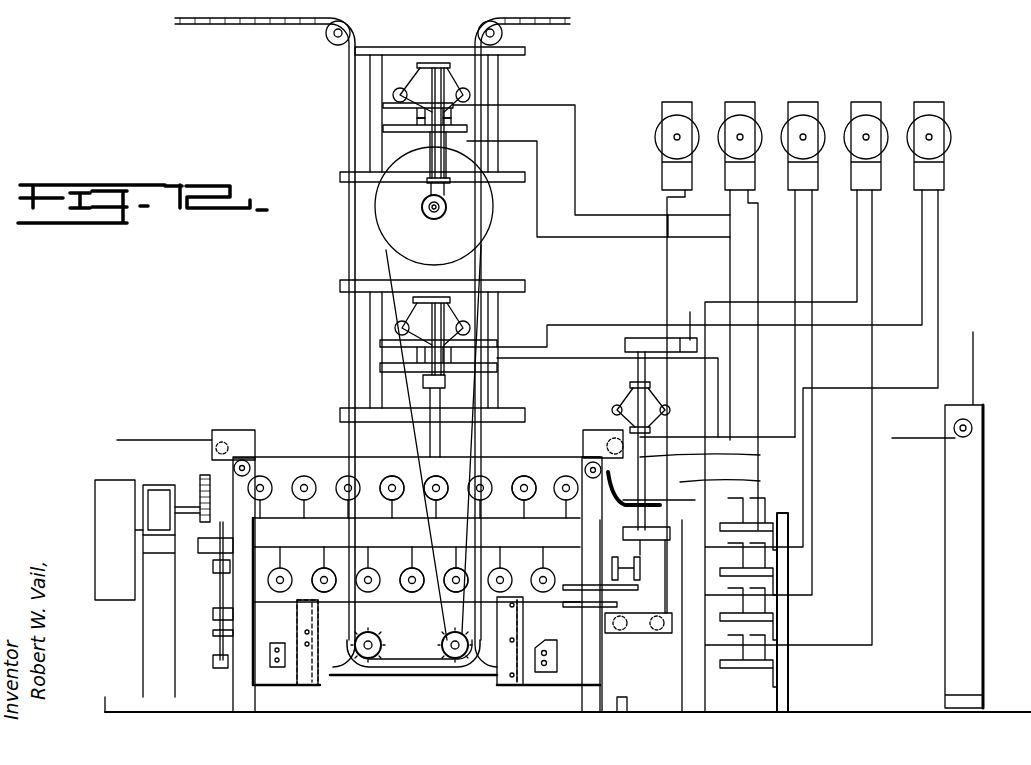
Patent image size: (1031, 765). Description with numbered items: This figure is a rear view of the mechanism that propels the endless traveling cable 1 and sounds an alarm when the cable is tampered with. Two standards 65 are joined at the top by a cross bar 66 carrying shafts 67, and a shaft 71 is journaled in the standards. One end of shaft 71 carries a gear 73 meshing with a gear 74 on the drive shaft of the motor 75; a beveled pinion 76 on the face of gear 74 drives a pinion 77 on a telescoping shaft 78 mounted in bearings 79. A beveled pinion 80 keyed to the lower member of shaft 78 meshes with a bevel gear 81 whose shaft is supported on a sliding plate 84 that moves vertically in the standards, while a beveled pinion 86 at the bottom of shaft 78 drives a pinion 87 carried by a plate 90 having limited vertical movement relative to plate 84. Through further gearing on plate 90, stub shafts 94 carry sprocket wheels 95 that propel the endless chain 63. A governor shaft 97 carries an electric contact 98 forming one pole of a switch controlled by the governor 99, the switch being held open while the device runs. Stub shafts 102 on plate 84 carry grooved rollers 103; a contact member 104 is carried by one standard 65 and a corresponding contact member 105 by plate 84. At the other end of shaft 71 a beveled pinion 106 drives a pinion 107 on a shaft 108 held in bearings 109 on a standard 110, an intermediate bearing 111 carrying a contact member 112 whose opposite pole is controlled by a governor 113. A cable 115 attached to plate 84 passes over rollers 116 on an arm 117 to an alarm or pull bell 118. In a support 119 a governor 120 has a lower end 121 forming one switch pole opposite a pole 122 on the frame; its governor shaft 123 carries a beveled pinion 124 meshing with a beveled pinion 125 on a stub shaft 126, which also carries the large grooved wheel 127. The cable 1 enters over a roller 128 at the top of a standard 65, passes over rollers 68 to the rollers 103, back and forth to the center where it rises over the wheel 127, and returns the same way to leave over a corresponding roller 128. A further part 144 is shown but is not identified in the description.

The endless traveling cable 1 is at (487, 256).
The endless chain 63 is at (347, 396).
The standards 65 is at (252, 668).
The cross bar 66 is at (324, 470).
The shafts 67 is at (390, 472).
The rollers 68 is at (514, 472).
The shaft 71 is at (251, 466).
The gear 73 is at (203, 478).
The gear 74 is at (200, 508).
The motor 75 is at (150, 508).
The beveled pinion 76 is at (252, 487).
The pinion 77 is at (268, 478).
The telescoping shaft 78 is at (217, 590).
The bearings 79 is at (215, 617).
The beveled pinion 80 is at (212, 573).
The bevel gear 81 is at (219, 590).
The sliding plate 84 is at (288, 682).
The beveled pinion 86 is at (215, 635).
The pinion 87 is at (220, 655).
The plate 90 is at (333, 673).
The stub shafts 94 is at (352, 648).
The sprocket wheels 95 is at (445, 642).
The governor shaft 97 is at (437, 433).
The electric contact 98 is at (400, 356).
The governor 99 is at (470, 330).
The stub shafts 102 is at (280, 592).
The grooved rollers 103 is at (323, 592).
The contact member 104 is at (645, 570).
The contact member 105 is at (621, 591).
The beveled pinion 106 is at (607, 457).
The pinion 107 is at (623, 508).
The shaft 108 is at (646, 543).
The bearings 109 is at (655, 337).
The standard 110 is at (691, 315).
The bearing 111 is at (711, 484).
The contact member 112 is at (719, 451).
The governor 113 is at (623, 398).
The cable 115 is at (665, 273).
The rollers 116 is at (658, 634).
The arm 117 is at (641, 634).
The alarm or pull bell 118 is at (668, 178).
The support 119 is at (498, 92).
The governor 120 is at (455, 115).
The lower end 121 is at (418, 113).
The opposite pole 122 is at (420, 124).
The governor shaft 123 is at (432, 147).
The beveled pinion 124 is at (426, 196).
The beveled pinion 125 is at (434, 219).
The stub shaft 126 is at (418, 210).
The large grooved wheel 127 is at (388, 205).
The roller 128 is at (222, 430).
The bracket 144 is at (553, 645).